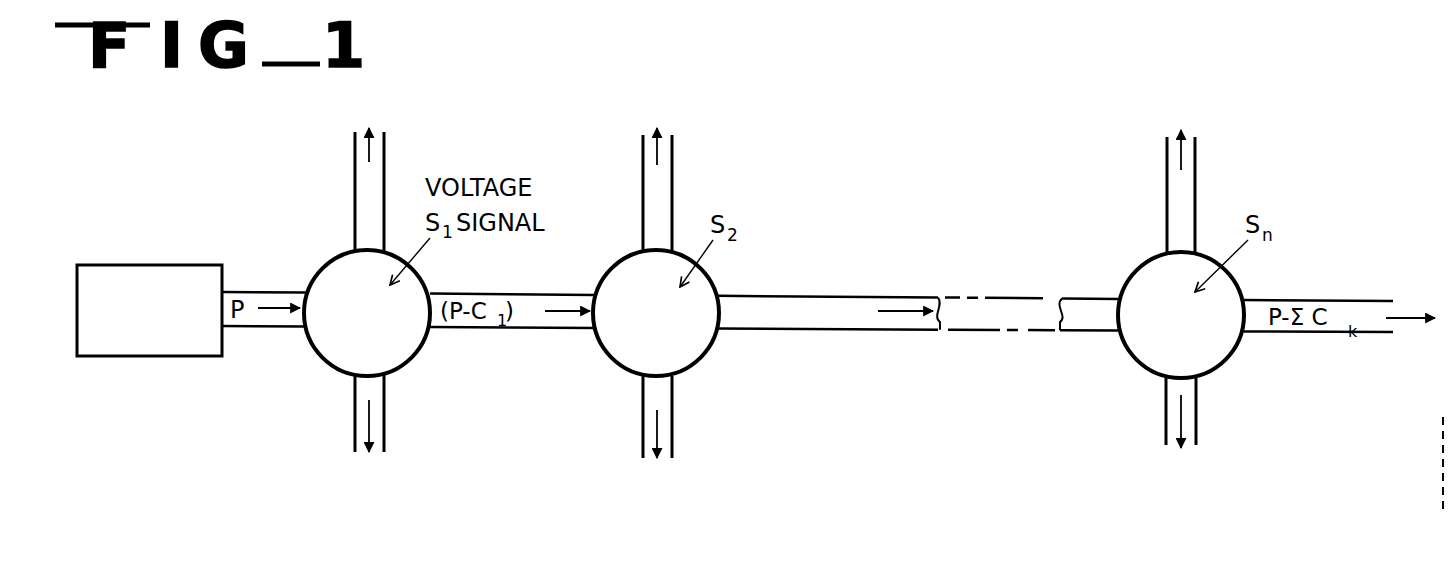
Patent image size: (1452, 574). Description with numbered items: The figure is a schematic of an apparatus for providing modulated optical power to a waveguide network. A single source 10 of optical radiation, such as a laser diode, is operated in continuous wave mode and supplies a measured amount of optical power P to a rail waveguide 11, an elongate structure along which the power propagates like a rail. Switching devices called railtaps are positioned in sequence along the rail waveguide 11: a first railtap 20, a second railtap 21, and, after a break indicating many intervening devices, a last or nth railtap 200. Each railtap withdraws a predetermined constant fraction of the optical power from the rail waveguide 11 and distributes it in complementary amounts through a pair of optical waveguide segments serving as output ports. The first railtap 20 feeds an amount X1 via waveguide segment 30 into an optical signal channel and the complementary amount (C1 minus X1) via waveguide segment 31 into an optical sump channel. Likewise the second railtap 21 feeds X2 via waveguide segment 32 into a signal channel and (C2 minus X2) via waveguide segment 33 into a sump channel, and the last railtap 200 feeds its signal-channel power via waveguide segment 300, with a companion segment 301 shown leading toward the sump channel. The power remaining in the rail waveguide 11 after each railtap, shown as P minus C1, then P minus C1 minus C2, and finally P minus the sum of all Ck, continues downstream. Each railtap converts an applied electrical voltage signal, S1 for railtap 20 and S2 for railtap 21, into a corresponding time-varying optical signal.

The source of optical radiation 10 is at (93, 263).
The rail waveguide 11 is at (878, 297).
The first railtap 20 is at (420, 364).
The second railtap 21 is at (706, 363).
The last railtap 200 is at (1232, 370).
The optical waveguide segment 30 is at (355, 408).
The optical waveguide segment 31 is at (355, 178).
The optical waveguide segment 32 is at (643, 412).
The optical waveguide segment 33 is at (643, 174).
The optical waveguide segment 300 is at (1166, 411).
The nth coupler output waveguide 301 is at (1167, 172).